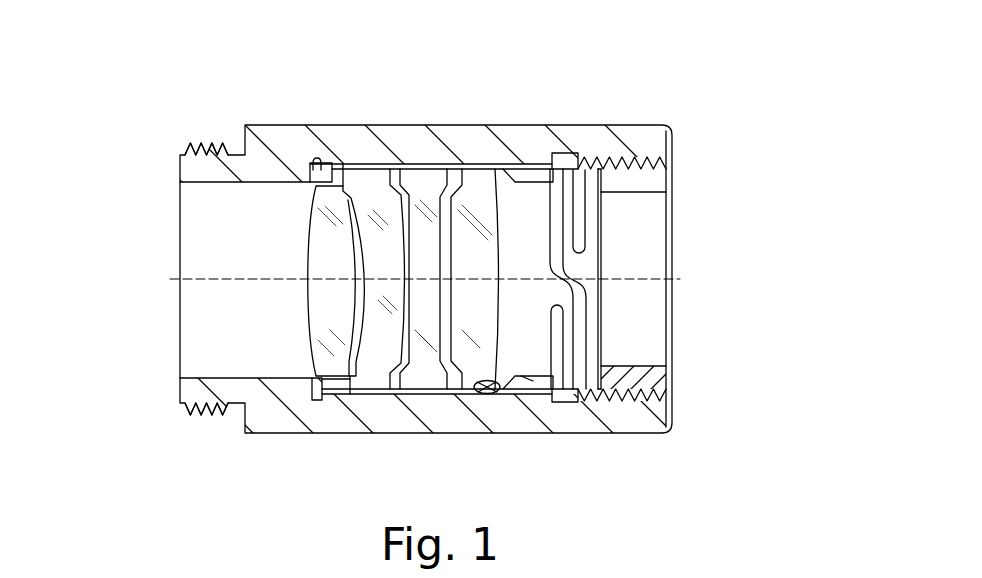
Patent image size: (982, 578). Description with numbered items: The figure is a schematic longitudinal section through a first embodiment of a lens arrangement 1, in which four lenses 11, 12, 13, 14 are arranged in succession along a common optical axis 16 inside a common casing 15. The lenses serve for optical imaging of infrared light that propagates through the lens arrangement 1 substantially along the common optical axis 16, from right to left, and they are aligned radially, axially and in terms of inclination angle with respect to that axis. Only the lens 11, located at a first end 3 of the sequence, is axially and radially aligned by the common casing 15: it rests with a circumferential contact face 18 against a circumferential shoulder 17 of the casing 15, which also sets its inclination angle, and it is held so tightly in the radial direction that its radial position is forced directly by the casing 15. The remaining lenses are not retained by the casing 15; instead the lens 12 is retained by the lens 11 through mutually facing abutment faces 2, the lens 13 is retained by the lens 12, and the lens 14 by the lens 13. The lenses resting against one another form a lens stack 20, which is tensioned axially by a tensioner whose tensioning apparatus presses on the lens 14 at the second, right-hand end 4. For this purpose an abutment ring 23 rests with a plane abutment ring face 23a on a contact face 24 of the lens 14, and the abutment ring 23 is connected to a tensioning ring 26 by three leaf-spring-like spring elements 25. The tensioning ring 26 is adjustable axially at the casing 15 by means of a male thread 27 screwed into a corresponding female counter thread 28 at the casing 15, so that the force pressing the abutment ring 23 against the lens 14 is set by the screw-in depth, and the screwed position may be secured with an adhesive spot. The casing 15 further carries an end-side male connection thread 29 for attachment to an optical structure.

The lens arrangement 1 is at (92, 138).
The abutment faces 2 is at (330, 375).
The first end 3 is at (314, 418).
The second end 4 is at (493, 145).
The lens 11 is at (346, 277).
The lens 12 is at (396, 277).
The lens 13 is at (436, 277).
The lens 14 is at (481, 277).
The common casing 15 is at (560, 138).
The common optical axis 16 is at (200, 278).
The circumferential shoulder 17 is at (305, 176).
The circumferential contact face 18 is at (321, 160).
The lens stack 20 is at (421, 360).
The abutment ring 23 is at (540, 380).
The plane abutment ring face 23a is at (525, 388).
The contact face 24 is at (487, 393).
The spring elements 25 is at (570, 313).
The tensioning ring 26 is at (615, 186).
The thread 27 is at (630, 388).
The counter thread 28 is at (620, 400).
The connection thread 29 is at (195, 410).